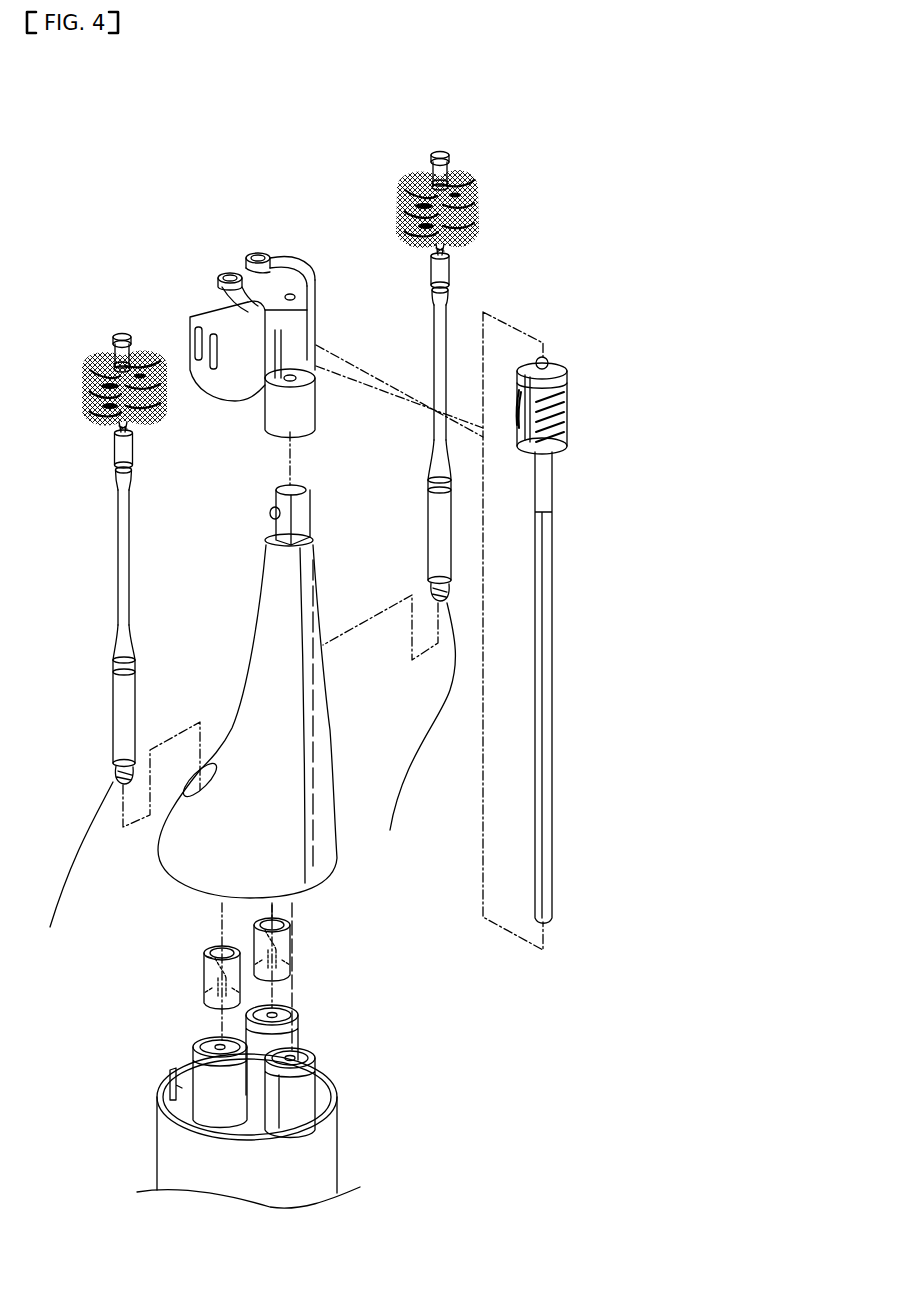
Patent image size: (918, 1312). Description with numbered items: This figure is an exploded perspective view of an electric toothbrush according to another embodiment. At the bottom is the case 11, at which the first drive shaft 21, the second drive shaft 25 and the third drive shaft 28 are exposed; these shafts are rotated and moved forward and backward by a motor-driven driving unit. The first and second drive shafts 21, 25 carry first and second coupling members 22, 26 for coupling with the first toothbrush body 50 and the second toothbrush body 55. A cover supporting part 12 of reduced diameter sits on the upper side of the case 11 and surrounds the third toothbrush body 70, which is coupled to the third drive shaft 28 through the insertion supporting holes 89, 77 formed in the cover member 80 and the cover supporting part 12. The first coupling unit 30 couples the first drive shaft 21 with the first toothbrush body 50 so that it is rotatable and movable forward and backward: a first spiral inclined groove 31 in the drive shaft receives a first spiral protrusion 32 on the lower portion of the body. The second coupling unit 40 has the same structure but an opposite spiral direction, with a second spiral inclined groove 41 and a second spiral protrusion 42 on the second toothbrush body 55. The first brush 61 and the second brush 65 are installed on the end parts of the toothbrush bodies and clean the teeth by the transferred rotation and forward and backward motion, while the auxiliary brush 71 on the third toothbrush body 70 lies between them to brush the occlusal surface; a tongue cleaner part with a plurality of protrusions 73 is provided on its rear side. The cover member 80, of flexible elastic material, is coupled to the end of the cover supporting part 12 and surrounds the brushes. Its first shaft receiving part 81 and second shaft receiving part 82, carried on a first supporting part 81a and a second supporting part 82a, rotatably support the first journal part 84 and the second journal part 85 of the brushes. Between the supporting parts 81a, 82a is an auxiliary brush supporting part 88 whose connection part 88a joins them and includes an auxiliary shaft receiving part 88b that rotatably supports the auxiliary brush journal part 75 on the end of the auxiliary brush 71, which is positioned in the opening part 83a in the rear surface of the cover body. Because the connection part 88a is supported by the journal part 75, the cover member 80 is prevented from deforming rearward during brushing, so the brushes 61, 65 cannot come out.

The case 11 is at (322, 1160).
The cover supporting part 12 is at (185, 862).
The first drive shaft 21 is at (274, 1022).
The first coupling member 22 is at (290, 944).
The second drive shaft 25 is at (204, 1040).
The second coupling member 26 is at (205, 978).
The third drive shaft 28 is at (292, 1056).
The first coupling unit 30 is at (404, 838).
The first spiral inclined groove 31 is at (288, 920).
The first spiral protrusion 32 is at (415, 730).
The second coupling unit 40 is at (60, 958).
The second spiral inclined groove 41 is at (206, 958).
The second spiral protrusion 42 is at (73, 867).
The first toothbrush body 50 is at (440, 318).
The second toothbrush body 55 is at (120, 513).
The first brush 61 is at (464, 186).
The second brush 65 is at (96, 380).
The third toothbrush body 70 is at (574, 538).
The auxiliary brush 71 is at (556, 384).
The protrusions 73 is at (560, 414).
The auxiliary brush journal part 75 is at (544, 357).
The insertion supporting hole 77 is at (272, 490).
The cover member 80 is at (211, 410).
The first shaft receiving part 81 is at (258, 253).
The first supporting part 81a is at (280, 258).
The second shaft receiving part 82 is at (228, 274).
The second supporting part 82a is at (222, 291).
The opening part 83a is at (273, 344).
The first journal part 84 is at (455, 141).
The second journal part 85 is at (92, 338).
The auxiliary brush supporting part 88 is at (386, 296).
The connection part 88a is at (272, 312).
The auxiliary shaft receiving part 88b is at (300, 298).
The insertion supporting hole 89 is at (311, 372).